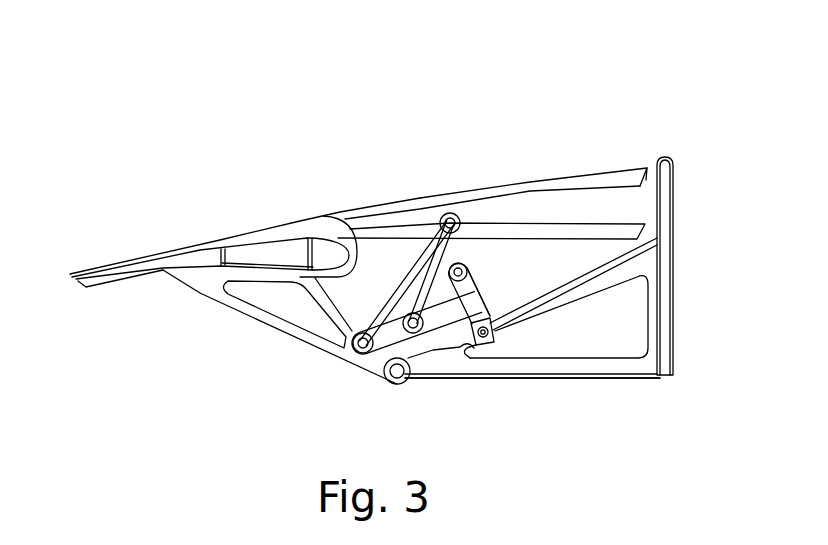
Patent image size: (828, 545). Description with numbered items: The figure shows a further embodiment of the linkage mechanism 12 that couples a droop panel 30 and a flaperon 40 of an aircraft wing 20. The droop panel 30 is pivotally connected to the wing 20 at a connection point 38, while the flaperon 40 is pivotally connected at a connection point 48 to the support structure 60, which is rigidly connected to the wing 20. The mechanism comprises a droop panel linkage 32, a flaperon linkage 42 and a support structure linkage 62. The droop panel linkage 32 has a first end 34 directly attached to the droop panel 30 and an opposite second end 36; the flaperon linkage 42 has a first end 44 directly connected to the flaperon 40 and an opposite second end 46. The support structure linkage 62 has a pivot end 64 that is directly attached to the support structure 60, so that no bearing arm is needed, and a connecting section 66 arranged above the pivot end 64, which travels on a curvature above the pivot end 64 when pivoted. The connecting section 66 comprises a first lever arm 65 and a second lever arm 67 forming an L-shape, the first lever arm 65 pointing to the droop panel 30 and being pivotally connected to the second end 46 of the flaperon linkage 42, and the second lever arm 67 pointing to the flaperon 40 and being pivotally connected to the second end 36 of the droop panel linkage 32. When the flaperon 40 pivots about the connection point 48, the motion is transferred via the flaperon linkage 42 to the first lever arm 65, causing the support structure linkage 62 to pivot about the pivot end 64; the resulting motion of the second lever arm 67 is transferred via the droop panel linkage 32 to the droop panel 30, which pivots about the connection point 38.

The linkage mechanism 12 is at (550, 394).
The wing 20 is at (667, 147).
The droop panel 30 is at (527, 188).
The droop panel linkage 32 is at (442, 219).
The first end 34 is at (447, 213).
The second end 36 is at (428, 292).
The connection point 38 is at (640, 200).
The flaperon 40 is at (197, 245).
The flaperon linkage 42 is at (395, 318).
The first end 44 is at (373, 354).
The second end 46 is at (423, 273).
The connection point 48 is at (401, 386).
The support structure 60 is at (640, 370).
The support structure linkage 62 is at (493, 320).
The pivot end 64 is at (500, 350).
The first lever arm 65 is at (488, 300).
The connecting section 66 is at (466, 270).
The second lever arm 67 is at (472, 352).